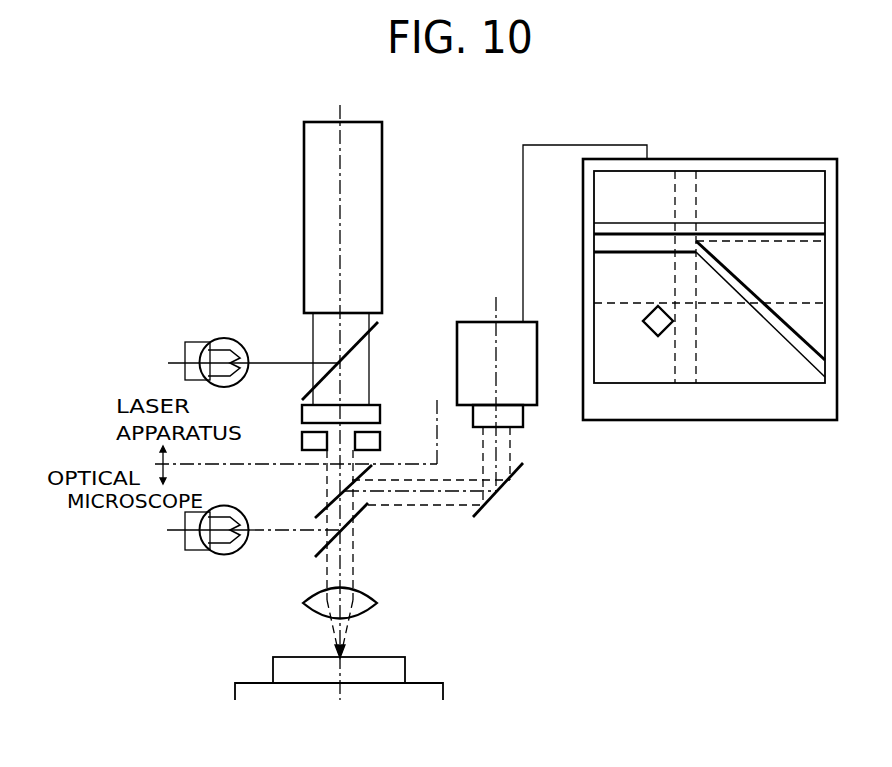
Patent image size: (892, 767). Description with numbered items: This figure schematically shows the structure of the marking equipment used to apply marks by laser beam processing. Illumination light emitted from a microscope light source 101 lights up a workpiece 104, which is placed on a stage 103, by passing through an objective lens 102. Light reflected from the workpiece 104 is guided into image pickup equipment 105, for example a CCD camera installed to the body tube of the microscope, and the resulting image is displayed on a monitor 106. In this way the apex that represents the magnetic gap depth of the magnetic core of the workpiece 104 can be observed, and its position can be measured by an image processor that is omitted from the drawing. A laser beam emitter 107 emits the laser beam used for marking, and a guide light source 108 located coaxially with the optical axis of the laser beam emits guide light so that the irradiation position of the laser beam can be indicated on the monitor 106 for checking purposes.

The microscope light source 101 is at (238, 512).
The objective lens 102 is at (365, 592).
The stage 103 is at (252, 683).
The workpiece 104 is at (290, 657).
The image pickup equipment 105 is at (477, 320).
The monitor 106 is at (702, 421).
The laser beam emitter 107 is at (383, 213).
The guide light source 108 is at (225, 338).